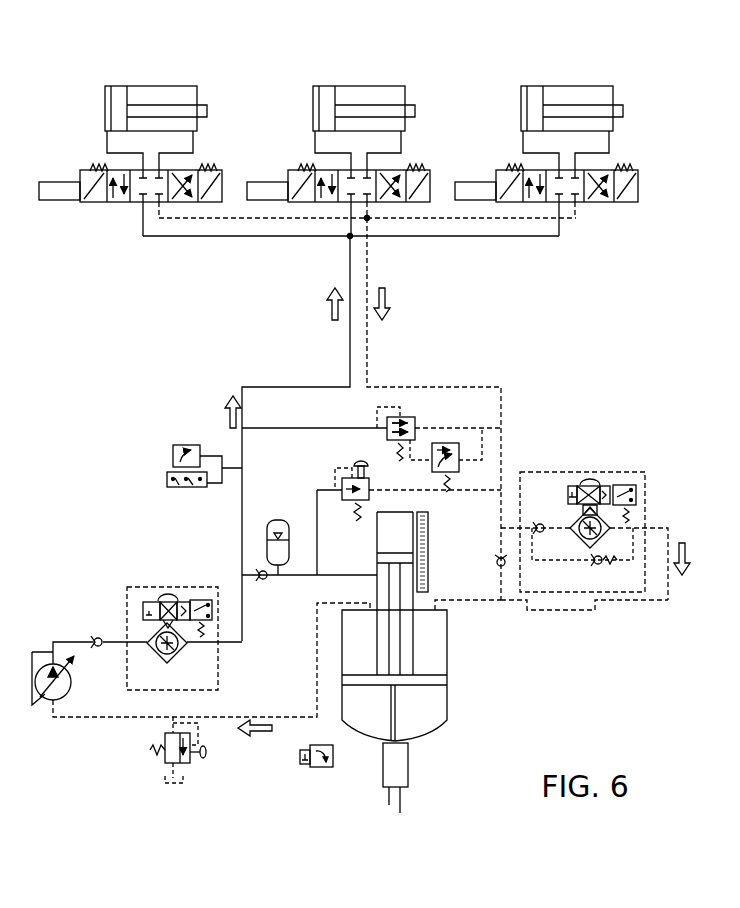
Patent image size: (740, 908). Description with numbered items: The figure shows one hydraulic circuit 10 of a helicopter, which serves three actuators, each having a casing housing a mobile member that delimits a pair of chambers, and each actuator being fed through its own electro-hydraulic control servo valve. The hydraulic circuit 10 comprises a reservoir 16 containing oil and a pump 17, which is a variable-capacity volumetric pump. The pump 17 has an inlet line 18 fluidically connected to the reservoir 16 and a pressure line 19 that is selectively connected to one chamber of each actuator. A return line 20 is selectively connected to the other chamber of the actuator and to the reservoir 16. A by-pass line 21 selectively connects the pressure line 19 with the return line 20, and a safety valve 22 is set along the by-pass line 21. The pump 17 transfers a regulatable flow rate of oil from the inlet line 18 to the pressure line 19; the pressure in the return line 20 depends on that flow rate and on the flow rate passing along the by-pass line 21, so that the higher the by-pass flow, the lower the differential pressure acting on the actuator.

The hydraulic circuit 10 is at (593, 316).
The reservoir 16 is at (432, 737).
The pump 17 is at (42, 707).
The inlet line 18 is at (112, 719).
The pressure line 19 is at (248, 407).
The return line 20 is at (508, 428).
The by-pass line 21 is at (455, 427).
The safety valve 22 is at (430, 417).